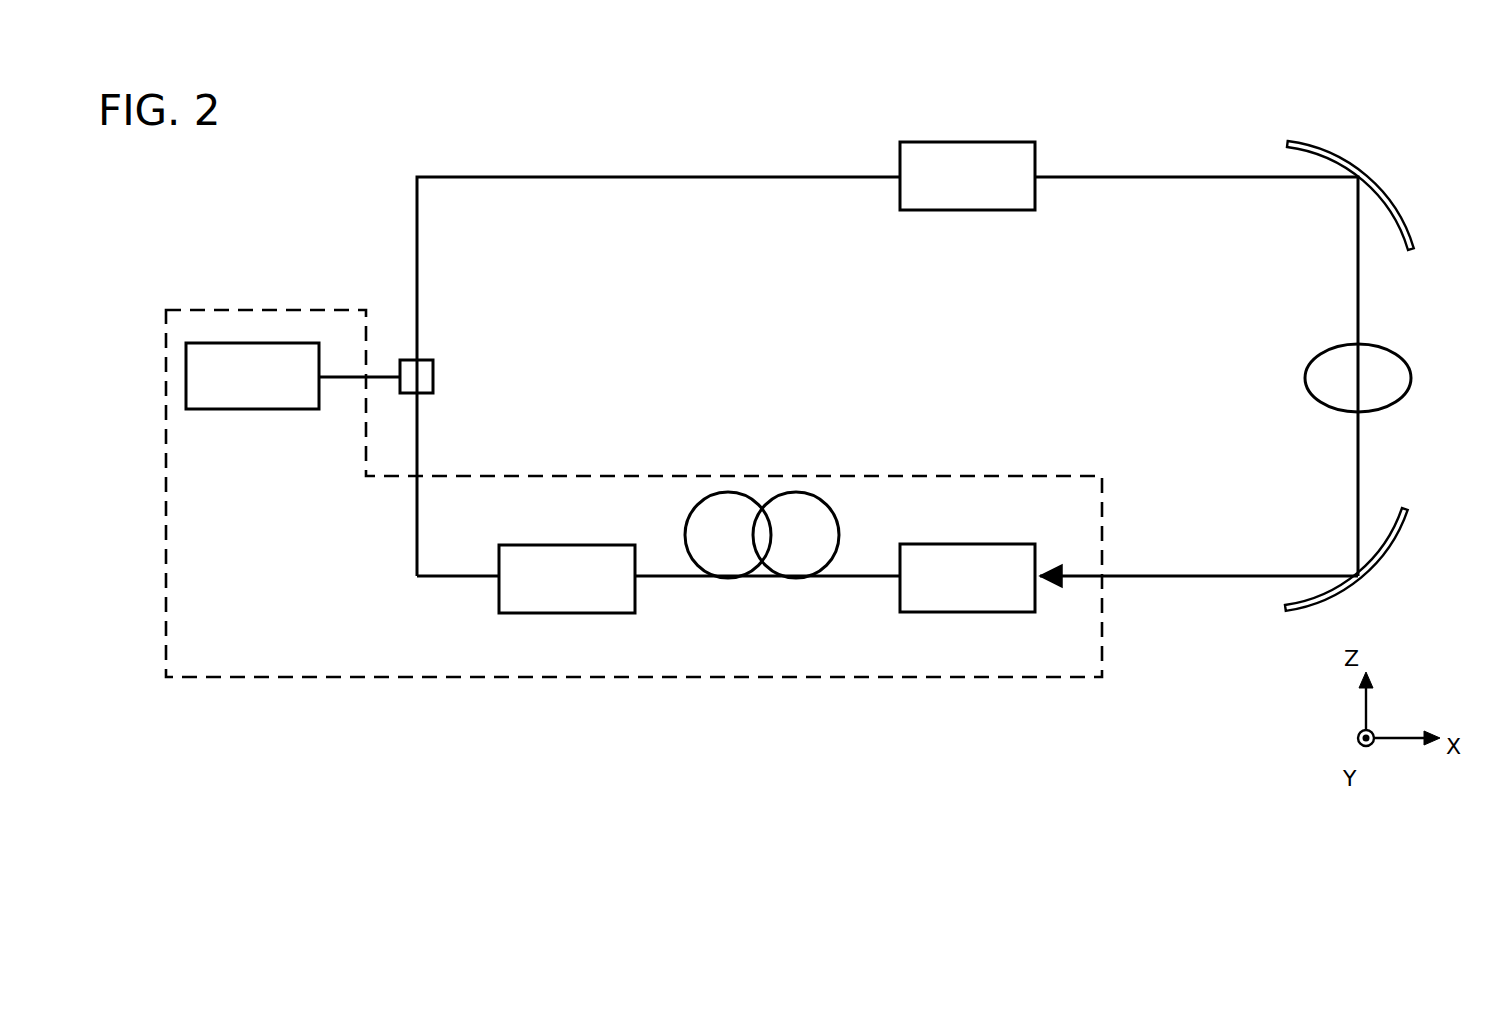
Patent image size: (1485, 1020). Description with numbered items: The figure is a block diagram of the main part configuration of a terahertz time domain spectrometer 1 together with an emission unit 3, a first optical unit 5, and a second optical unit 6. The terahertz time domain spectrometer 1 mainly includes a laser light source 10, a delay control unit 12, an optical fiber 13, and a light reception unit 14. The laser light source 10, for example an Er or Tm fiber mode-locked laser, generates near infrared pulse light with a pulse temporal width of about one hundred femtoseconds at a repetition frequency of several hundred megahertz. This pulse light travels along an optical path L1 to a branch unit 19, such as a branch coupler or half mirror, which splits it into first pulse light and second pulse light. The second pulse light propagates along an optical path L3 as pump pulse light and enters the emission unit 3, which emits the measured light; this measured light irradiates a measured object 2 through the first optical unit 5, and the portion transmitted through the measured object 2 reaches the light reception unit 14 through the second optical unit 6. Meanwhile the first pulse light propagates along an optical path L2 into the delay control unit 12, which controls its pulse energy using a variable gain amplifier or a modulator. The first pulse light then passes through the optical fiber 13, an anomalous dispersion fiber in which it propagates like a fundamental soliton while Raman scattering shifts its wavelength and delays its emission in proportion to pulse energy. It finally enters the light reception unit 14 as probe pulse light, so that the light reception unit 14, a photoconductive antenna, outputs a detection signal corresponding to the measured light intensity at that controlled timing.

The terahertz time domain spectrometer 1 is at (292, 677).
The measured object 2 is at (1397, 368).
The emission unit 3 is at (918, 210).
The first optical unit 5 is at (1397, 208).
The second optical unit 6 is at (1403, 510).
The laser light source 10 is at (186, 388).
The delay control unit 12 is at (514, 612).
The optical fiber 13 is at (795, 493).
The light reception unit 14 is at (921, 612).
The branch unit 19 is at (433, 373).
The optical path L1 is at (333, 377).
The optical path L2 is at (416, 552).
The optical path L3 is at (417, 192).